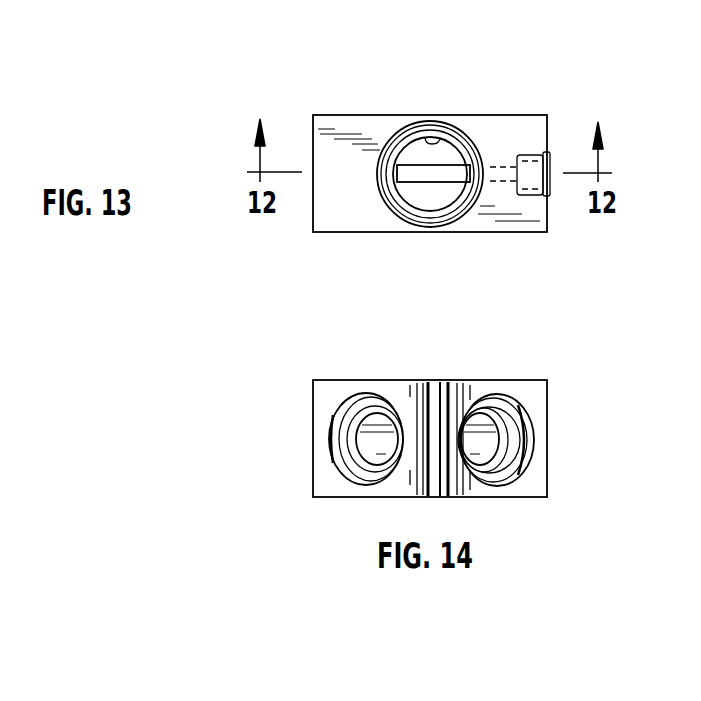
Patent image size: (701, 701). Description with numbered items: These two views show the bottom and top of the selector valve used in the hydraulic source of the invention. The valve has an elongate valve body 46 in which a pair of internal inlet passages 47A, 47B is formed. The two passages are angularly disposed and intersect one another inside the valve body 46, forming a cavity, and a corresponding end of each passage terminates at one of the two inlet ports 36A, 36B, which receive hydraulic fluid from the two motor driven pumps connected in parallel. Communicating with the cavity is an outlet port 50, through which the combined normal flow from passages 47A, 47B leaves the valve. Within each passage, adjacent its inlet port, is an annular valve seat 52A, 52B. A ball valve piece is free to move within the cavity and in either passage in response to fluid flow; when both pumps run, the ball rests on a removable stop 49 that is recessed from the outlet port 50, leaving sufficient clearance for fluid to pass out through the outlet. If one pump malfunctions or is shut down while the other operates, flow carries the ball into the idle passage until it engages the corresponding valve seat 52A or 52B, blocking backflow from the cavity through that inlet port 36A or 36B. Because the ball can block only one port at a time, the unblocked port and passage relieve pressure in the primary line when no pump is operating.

In FIG. 13, the valve body 46 is at (510, 125).
In FIG. 13, the removable stop 49 is at (405, 172).
In FIG. 13, the outlet port 50 is at (432, 138).
In FIG. 14, the inlet port 36A is at (533, 440).
In FIG. 14, the inlet port 36B is at (337, 442).
In FIG. 14, the internal inlet passage 47A is at (493, 422).
In FIG. 14, the internal inlet passage 47B is at (380, 420).
In FIG. 14, the annular valve seat 52A is at (527, 413).
In FIG. 14, the annular valve seat 52B is at (357, 398).